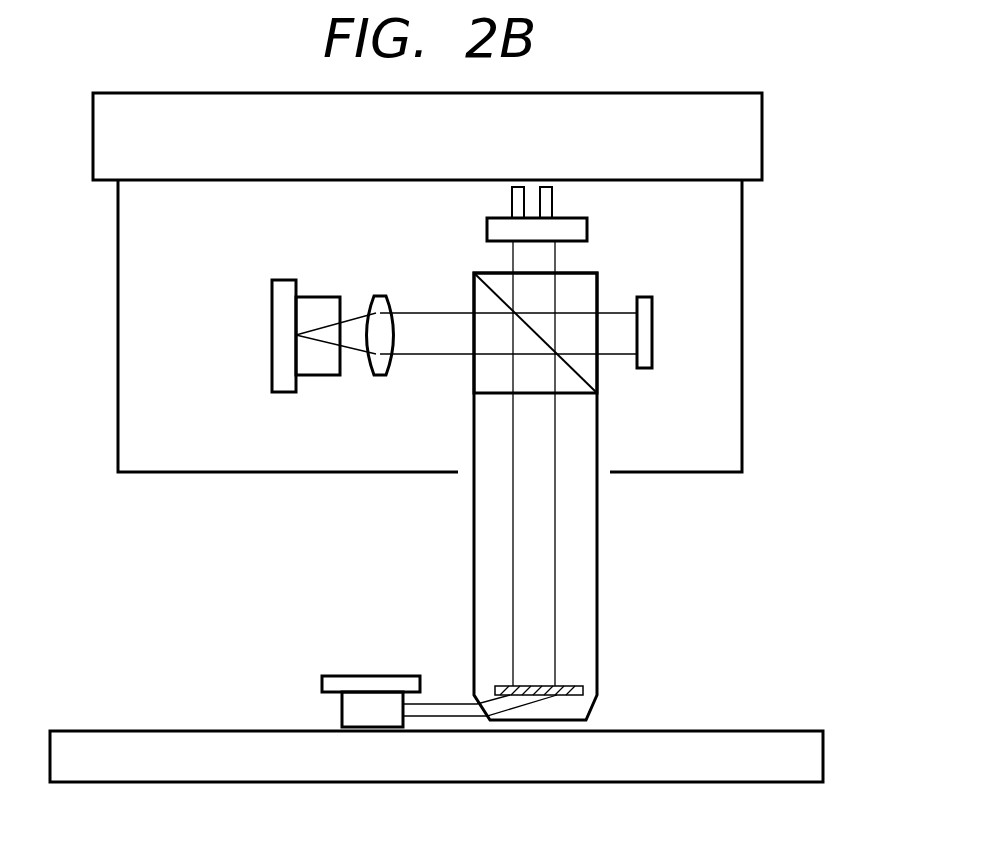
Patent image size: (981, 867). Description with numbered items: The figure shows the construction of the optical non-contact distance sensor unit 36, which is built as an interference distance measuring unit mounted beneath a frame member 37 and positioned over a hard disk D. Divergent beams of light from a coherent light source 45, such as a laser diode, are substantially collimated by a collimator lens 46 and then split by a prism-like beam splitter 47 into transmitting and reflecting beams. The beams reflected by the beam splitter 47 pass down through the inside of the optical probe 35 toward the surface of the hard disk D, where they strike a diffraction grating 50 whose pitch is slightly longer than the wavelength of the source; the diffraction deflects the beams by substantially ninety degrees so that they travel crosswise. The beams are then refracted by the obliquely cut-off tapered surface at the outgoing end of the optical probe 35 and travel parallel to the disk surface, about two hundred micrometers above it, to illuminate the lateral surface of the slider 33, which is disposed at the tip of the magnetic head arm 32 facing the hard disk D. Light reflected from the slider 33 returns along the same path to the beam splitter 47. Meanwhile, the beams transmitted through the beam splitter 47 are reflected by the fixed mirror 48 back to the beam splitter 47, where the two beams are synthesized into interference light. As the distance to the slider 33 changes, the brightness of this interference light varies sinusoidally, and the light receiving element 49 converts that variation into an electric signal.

The upper frame member 37 is at (762, 108).
The optical non-contact distance sensor unit 36 is at (742, 232).
The optical probe 35 is at (600, 552).
The beam splitter 47 is at (590, 380).
The light receiving element 49 is at (588, 226).
The mirror 48 is at (648, 295).
The coherent light source 45 is at (285, 278).
The collimator lens 46 is at (382, 290).
The diffraction grating 50 is at (572, 686).
The magnetic head arm 32 is at (393, 675).
The slider 33 is at (340, 706).
The hard disk D is at (755, 729).